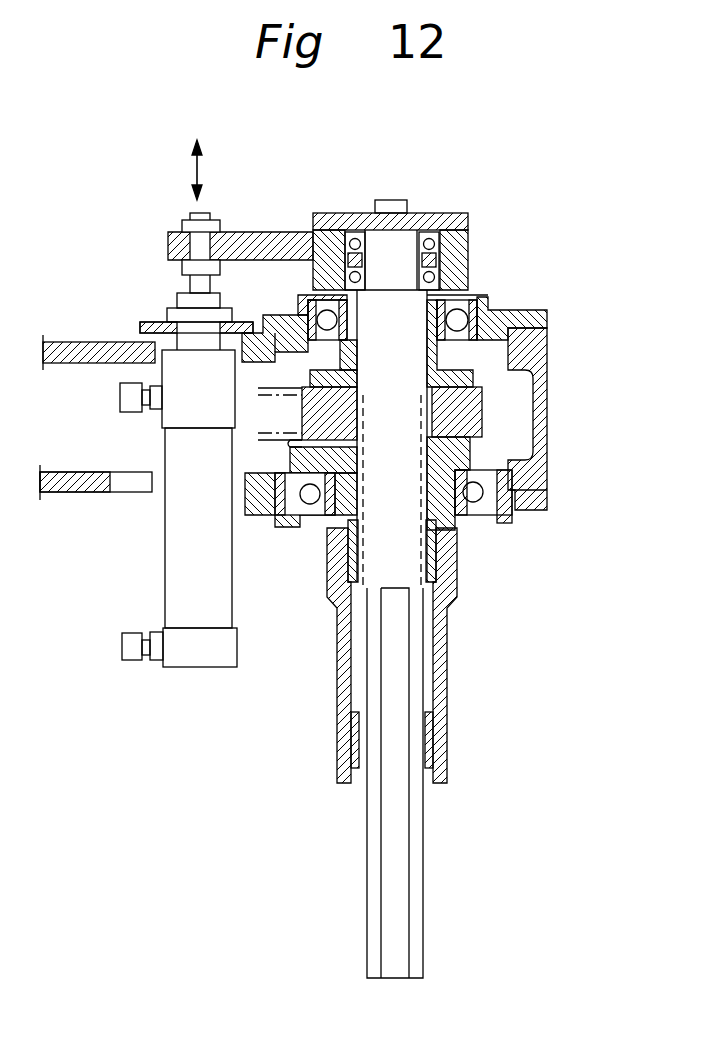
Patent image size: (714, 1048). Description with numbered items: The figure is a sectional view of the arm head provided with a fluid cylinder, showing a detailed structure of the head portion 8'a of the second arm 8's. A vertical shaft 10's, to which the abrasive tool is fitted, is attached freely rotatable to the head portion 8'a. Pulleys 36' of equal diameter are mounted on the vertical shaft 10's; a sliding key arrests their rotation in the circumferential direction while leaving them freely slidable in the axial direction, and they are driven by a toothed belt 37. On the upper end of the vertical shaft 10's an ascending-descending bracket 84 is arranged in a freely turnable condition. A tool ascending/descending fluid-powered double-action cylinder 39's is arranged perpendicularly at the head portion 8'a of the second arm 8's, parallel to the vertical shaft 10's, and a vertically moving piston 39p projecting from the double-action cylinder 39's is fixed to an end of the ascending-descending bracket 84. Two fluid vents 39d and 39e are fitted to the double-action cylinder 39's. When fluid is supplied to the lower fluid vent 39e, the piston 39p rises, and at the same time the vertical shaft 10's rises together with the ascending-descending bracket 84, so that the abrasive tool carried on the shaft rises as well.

The ascending-descending bracket 84 is at (301, 232).
The head portion 8'a is at (443, 379).
The pulleys 36' is at (415, 413).
The toothed belt 37 is at (292, 377).
The vertical shaft 10's is at (436, 783).
The No. 2 arm 8's is at (94, 403).
The piston 39p is at (195, 284).
The double-action cylinder 39's is at (169, 480).
The fluid vent 39d is at (120, 400).
The fluid vent 39e is at (120, 650).